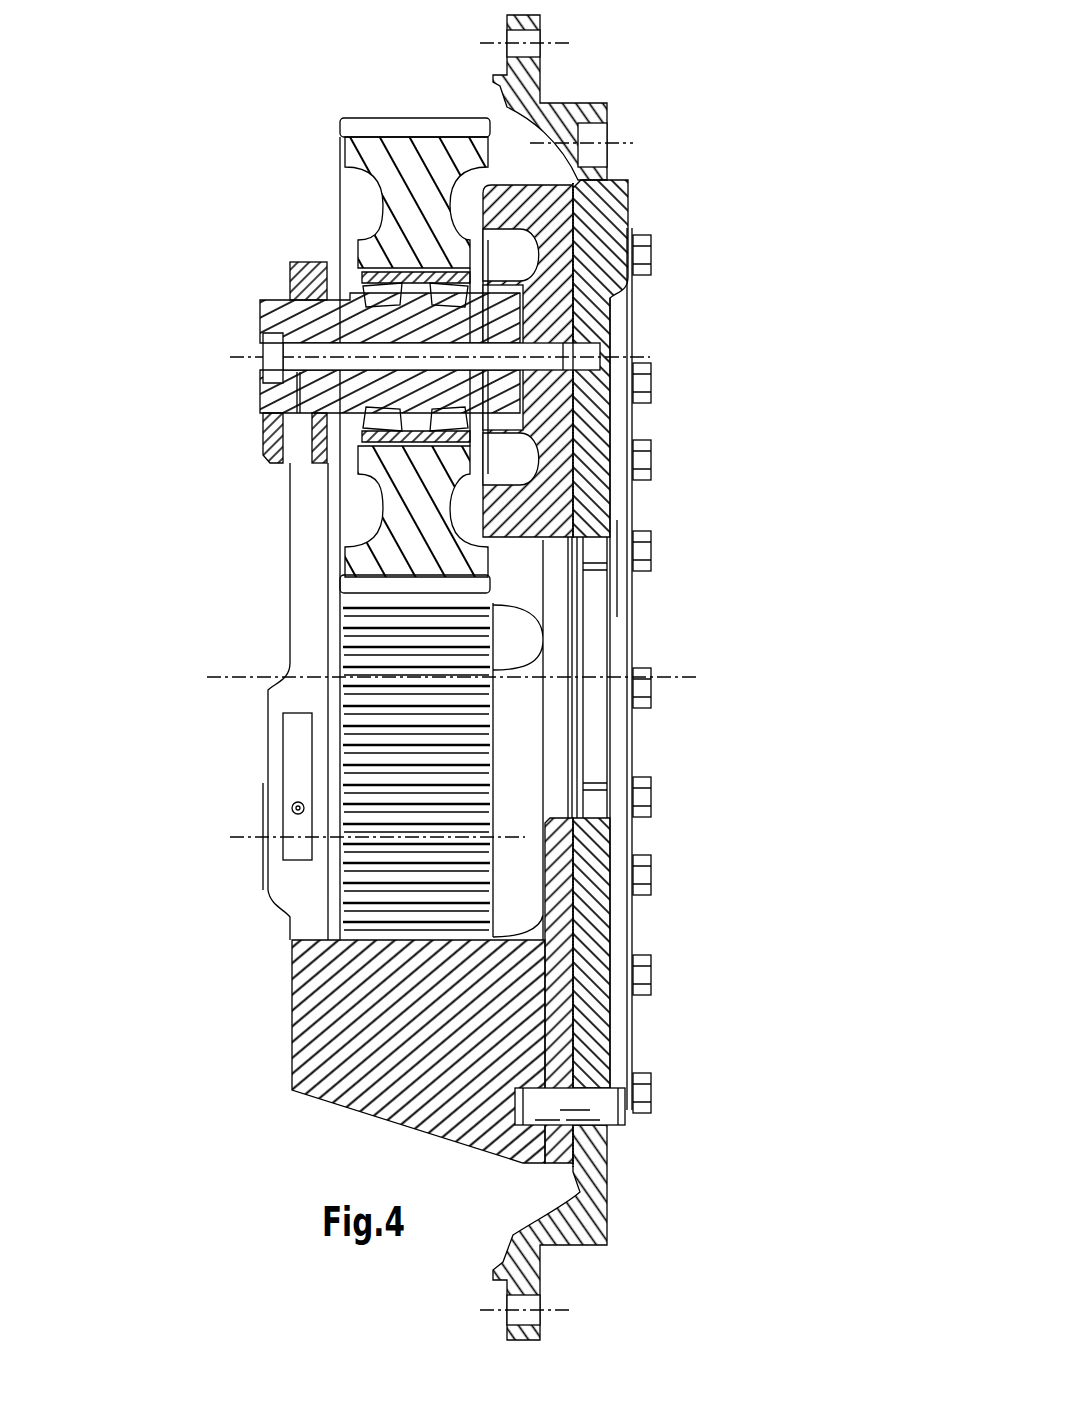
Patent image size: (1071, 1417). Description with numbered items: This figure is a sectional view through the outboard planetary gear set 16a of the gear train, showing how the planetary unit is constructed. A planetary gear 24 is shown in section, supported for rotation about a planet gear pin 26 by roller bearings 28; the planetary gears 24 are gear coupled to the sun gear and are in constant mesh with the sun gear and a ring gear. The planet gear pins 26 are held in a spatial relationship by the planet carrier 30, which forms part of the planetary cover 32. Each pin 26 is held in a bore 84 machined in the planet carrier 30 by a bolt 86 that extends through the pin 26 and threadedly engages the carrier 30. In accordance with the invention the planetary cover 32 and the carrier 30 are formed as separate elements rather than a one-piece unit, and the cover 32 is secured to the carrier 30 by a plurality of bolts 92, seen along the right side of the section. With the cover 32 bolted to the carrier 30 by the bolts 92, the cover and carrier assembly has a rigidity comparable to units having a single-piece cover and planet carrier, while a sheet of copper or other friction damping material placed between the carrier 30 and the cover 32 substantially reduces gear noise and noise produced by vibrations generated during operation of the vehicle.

The outermost planetary gear set 16a is at (372, 60).
The planetary gear 24 is at (370, 150).
The planet gear pin 26 is at (277, 320).
The roller bearing 28 is at (345, 256).
The planet carrier 30 is at (555, 418).
The planetary cover 32 is at (605, 218).
The bore 84 is at (604, 390).
The bolt 86 is at (264, 368).
The bolt 92 is at (642, 260).